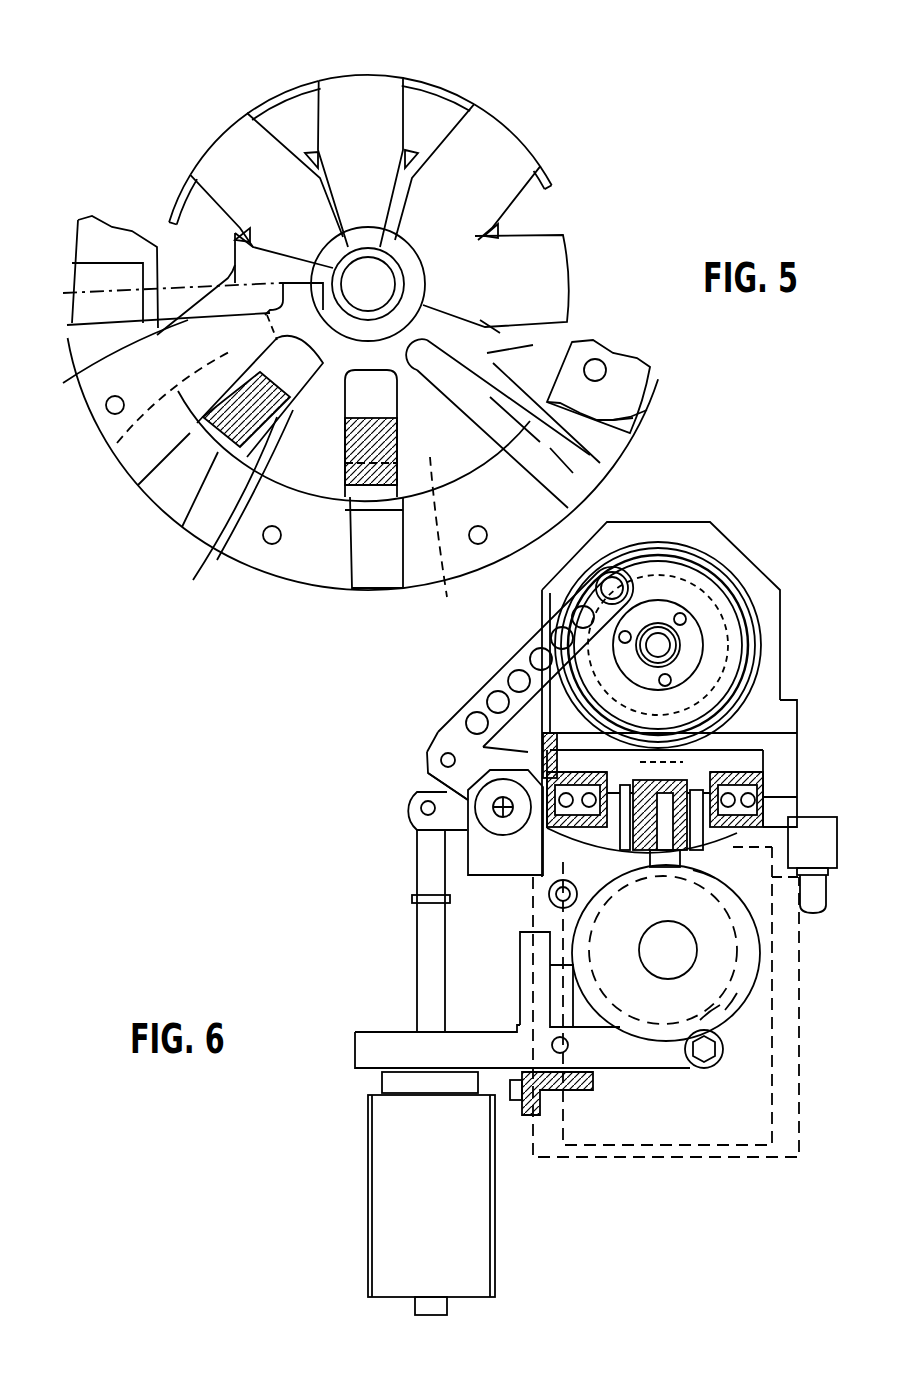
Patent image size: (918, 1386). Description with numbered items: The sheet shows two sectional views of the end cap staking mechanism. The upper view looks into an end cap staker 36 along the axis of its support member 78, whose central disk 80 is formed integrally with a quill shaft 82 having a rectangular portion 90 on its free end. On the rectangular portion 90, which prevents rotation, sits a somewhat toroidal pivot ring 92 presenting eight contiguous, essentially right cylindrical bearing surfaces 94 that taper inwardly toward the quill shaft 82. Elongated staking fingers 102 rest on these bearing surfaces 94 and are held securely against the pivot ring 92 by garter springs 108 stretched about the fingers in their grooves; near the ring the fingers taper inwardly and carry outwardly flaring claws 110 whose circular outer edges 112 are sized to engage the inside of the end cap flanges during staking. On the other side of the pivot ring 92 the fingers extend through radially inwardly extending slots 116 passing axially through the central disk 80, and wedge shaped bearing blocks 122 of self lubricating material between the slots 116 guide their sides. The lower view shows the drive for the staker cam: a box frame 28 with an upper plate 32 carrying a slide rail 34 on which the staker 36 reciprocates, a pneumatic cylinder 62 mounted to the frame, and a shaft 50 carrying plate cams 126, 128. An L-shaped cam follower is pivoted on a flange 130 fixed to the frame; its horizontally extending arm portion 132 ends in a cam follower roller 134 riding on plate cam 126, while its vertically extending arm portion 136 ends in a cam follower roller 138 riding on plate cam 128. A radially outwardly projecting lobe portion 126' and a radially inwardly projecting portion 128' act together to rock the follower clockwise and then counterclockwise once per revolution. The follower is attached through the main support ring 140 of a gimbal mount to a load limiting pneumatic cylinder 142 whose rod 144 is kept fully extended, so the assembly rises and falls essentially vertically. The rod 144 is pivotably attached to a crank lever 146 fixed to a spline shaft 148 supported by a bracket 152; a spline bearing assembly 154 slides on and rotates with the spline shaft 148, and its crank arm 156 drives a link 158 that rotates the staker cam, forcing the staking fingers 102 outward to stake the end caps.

In FIG. 6, the box frame 28 is at (727, 1124).
In FIG. 6, the upper plate 32 is at (782, 820).
In FIG. 6, the slide rail 34 is at (782, 740).
In FIG. 6, the end cap staker 36 is at (802, 596).
In FIG. 6, the shaft 50 is at (685, 960).
In FIG. 6, the pneumatic cylinder 62 is at (828, 840).
In FIG. 5, the support member 78 is at (298, 572).
In FIG. 5, the central disk 80 is at (622, 450).
In FIG. 5, the quill shaft 82 is at (368, 275).
In FIG. 5, the rectangular portion 90 is at (328, 308).
In FIG. 5, the pivot ring 92 is at (540, 342).
In FIG. 5, the bearing surface 94 is at (190, 330).
In FIG. 5, the staking finger 102 is at (372, 90).
In FIG. 5, the garter spring 108 is at (440, 85).
In FIG. 5, the claw 110 is at (325, 252).
In FIG. 5, the circular outer edge 112 is at (290, 268).
In FIG. 5, the slot 116 is at (633, 418).
In FIG. 5, the wedge shaped bearing block 122 is at (108, 448).
In FIG. 6, the plate cam 126 is at (718, 950).
In FIG. 6, the lobe portion 126' is at (778, 1036).
In FIG. 6, the plate cam 128 is at (791, 1018).
In FIG. 6, the radially inwardly projecting portion 128' is at (786, 902).
In FIG. 6, the flange 130 is at (527, 1118).
In FIG. 6, the horizontally extending arm portion 132 is at (640, 1052).
In FIG. 6, the cam follower roller 134 is at (723, 1057).
In FIG. 6, the vertically extending arm portion 136 is at (558, 990).
In FIG. 6, the cam follower roller 138 is at (548, 895).
In FIG. 6, the main support ring 140 is at (375, 1055).
In FIG. 6, the load limiting pneumatic cylinder 142 is at (395, 1152).
In FIG. 6, the rod 144 is at (428, 955).
In FIG. 6, the crank lever 146 is at (410, 822).
In FIG. 6, the spline shaft 148 is at (440, 775).
In FIG. 6, the bracket 152 is at (470, 852).
In FIG. 6, the spline bearing assembly 154 is at (445, 793).
In FIG. 6, the crank arm 156 is at (440, 745).
In FIG. 6, the link 158 is at (515, 668).